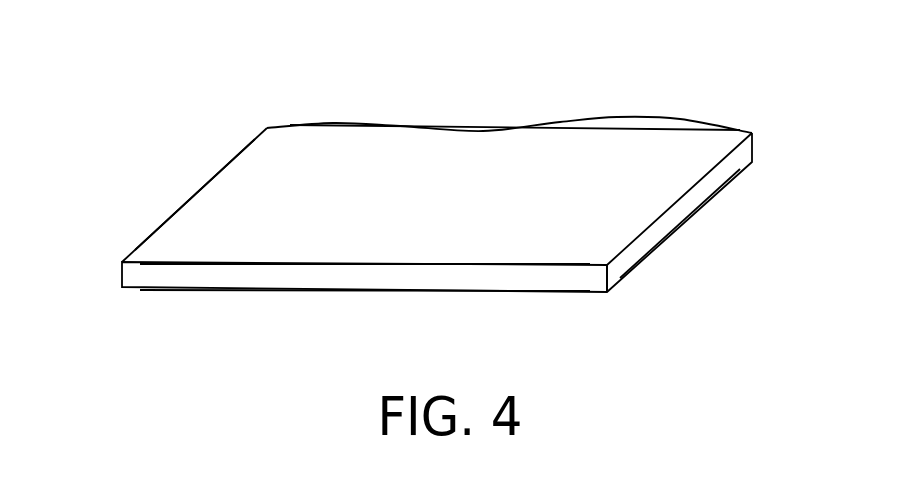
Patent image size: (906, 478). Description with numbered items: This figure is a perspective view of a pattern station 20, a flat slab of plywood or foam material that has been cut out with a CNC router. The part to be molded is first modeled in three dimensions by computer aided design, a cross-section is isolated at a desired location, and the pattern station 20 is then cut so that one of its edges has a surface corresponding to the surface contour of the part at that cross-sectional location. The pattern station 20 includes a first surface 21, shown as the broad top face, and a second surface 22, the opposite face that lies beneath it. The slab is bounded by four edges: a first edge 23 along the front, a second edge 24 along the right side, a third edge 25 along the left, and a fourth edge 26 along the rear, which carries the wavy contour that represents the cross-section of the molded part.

The pattern station 20 is at (158, 217).
The first surface 21 is at (280, 243).
The second surface 22 is at (622, 278).
The first edge 23 is at (562, 283).
The second edge 24 is at (665, 224).
The third edge 25 is at (230, 162).
The fourth edge 26 is at (458, 130).